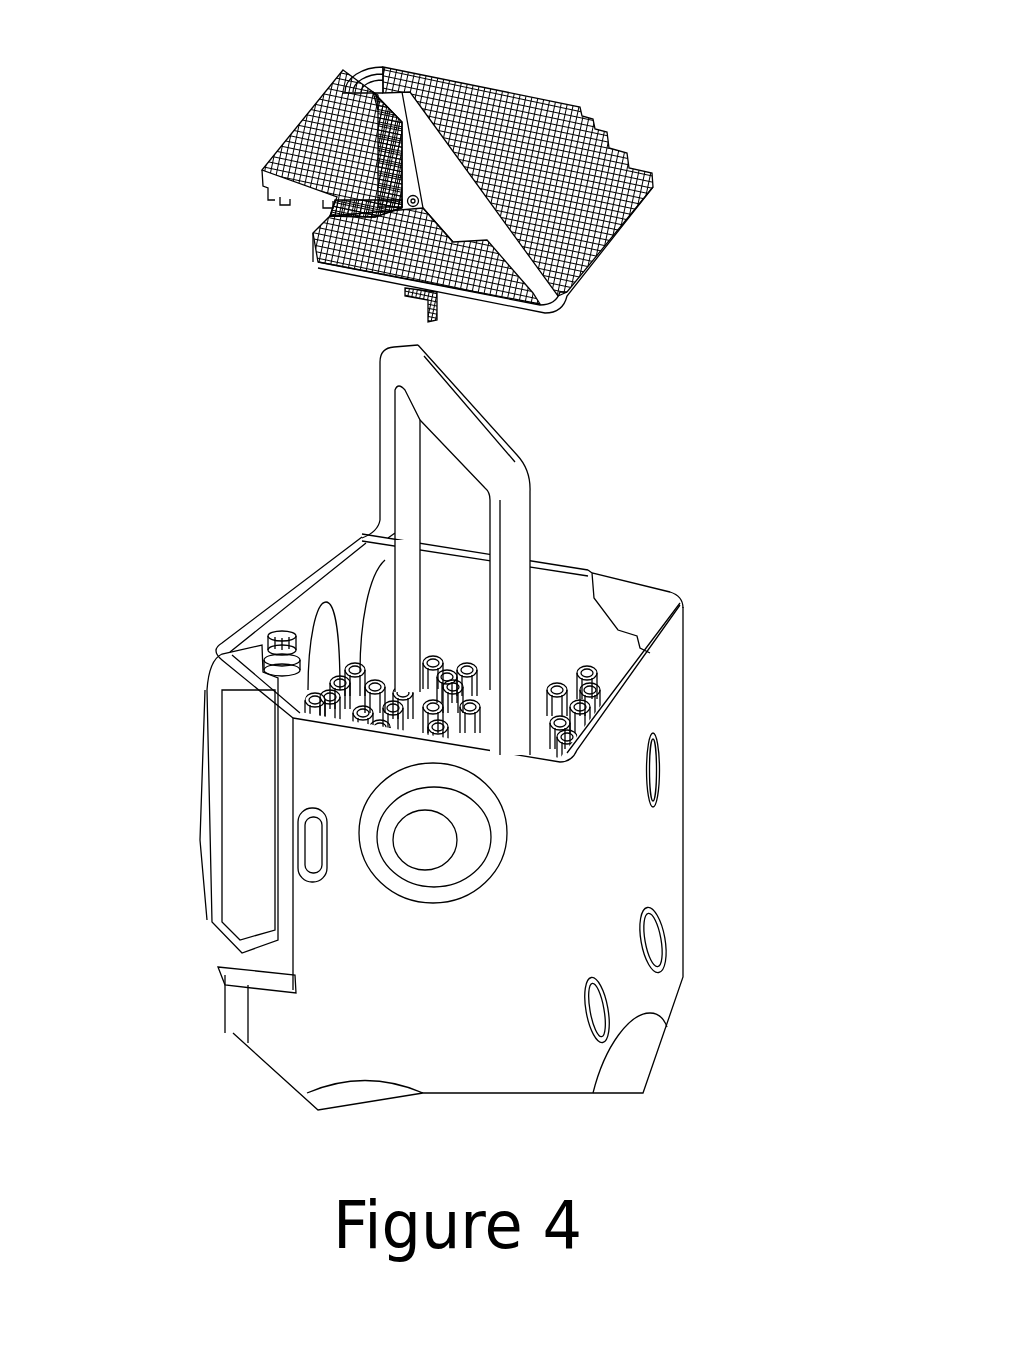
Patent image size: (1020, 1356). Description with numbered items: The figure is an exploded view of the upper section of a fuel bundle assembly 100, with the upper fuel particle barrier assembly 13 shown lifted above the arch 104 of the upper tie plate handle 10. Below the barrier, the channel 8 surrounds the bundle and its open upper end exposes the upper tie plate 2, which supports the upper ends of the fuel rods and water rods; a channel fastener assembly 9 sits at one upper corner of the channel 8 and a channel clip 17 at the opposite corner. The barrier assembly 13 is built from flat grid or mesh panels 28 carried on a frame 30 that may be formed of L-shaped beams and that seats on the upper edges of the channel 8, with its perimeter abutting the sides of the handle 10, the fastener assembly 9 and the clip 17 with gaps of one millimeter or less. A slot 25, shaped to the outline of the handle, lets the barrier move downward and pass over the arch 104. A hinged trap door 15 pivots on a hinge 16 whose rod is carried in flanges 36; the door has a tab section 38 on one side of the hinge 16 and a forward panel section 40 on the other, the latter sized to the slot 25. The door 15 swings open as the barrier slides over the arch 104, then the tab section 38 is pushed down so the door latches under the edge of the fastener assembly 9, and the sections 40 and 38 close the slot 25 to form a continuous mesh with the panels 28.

The fuel bundle assembly 100 is at (163, 460).
The upper fuel particle barrier assembly 13 is at (465, 200).
The slot 25 is at (600, 137).
The trap door 15 is at (340, 80).
The flat grid or mesh panels 28 is at (308, 137).
The tab section 38 is at (370, 157).
The flanges 36 is at (347, 213).
The hinge 16 is at (415, 195).
The frame 30 is at (352, 277).
The forward panel section 40 is at (410, 302).
The channel 8 is at (668, 860).
The upper tie plate 2 is at (595, 686).
The channel clip 17 is at (657, 602).
The upper tie plate handle 10 is at (380, 438).
The arch 104 is at (487, 411).
The channel fastener assembly 9 is at (243, 668).